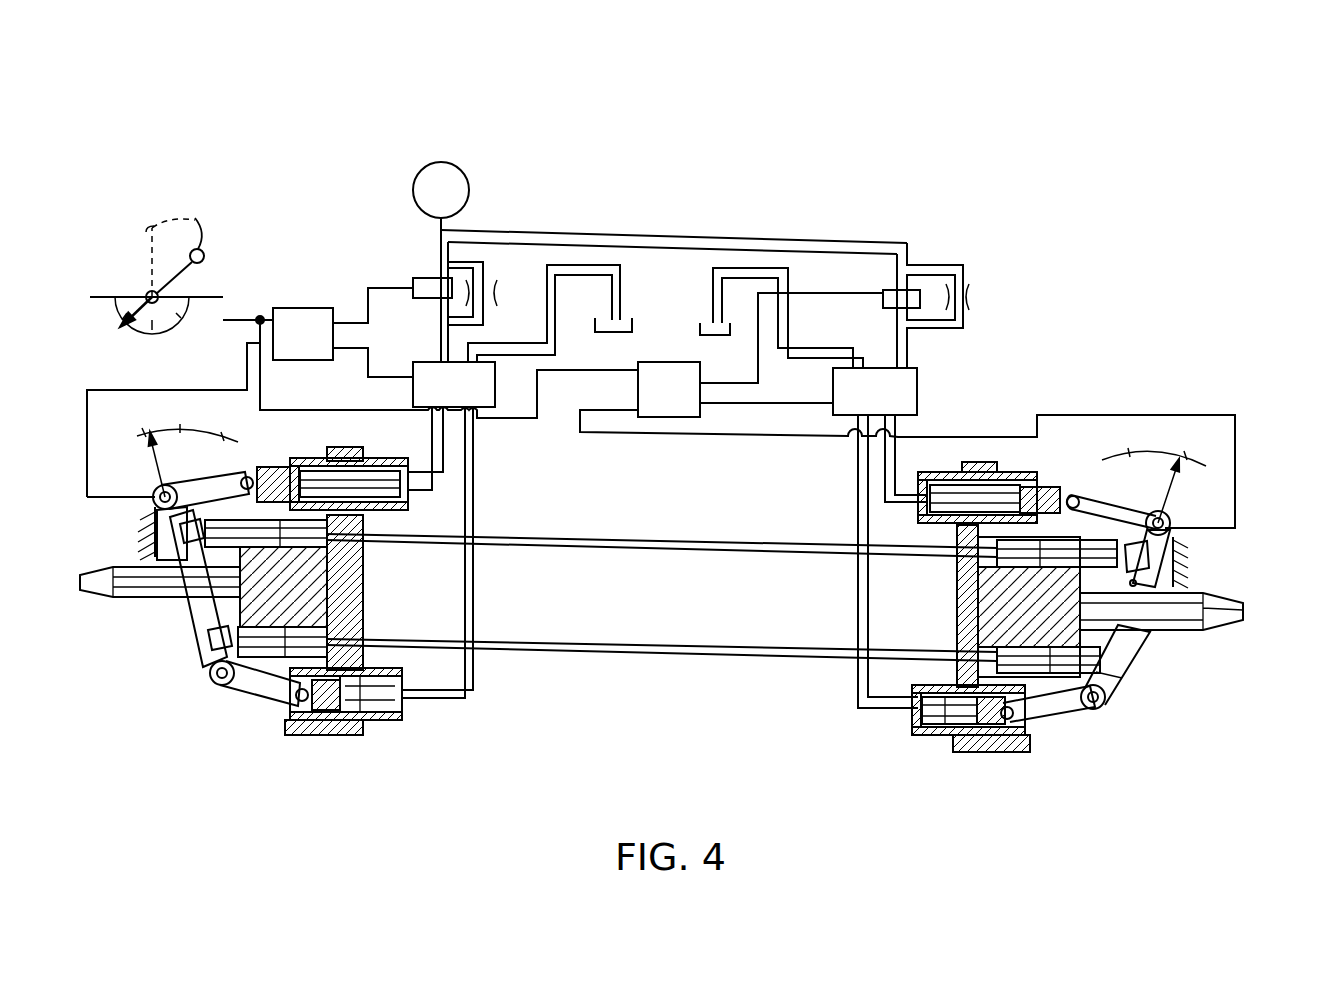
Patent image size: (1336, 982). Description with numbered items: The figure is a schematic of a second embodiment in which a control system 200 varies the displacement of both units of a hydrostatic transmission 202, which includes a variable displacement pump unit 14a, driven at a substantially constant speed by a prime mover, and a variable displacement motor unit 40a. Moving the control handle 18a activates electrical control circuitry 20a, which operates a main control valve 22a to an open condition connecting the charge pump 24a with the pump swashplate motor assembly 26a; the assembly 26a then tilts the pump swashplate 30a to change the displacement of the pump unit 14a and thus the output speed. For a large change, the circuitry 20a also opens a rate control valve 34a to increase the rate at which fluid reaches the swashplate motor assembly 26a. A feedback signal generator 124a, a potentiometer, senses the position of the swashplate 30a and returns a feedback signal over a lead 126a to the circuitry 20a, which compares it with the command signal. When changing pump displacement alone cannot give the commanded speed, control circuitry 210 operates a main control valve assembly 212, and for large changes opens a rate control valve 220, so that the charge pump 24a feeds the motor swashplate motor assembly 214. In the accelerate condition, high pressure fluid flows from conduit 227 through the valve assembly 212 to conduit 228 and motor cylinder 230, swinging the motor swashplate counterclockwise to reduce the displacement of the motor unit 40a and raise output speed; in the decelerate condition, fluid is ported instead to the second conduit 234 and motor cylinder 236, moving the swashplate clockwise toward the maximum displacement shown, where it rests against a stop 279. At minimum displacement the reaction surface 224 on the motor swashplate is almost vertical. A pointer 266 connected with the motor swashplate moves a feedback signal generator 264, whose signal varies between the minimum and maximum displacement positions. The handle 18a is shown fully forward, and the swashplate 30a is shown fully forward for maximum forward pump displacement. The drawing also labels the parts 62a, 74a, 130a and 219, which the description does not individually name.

The charge pump 24a is at (443, 162).
The control handle 18a is at (196, 223).
The electrical control circuitry 20a is at (298, 308).
The rate control valve 34a is at (412, 278).
The main control valve 22a is at (408, 399).
The lead 126a is at (87, 430).
The second signal generator 124a is at (115, 490).
The pointer lever 130a is at (162, 470).
The servo cylinder 62a is at (417, 458).
The hydraulic line 74a is at (473, 505).
The variable displacement pump unit 14a is at (200, 693).
The swashplate 30a is at (188, 628).
The swashplate motor assembly 26a is at (326, 746).
The control circuitry 210 is at (678, 352).
The rate control valve 220 is at (885, 292).
The conduit 227 is at (905, 362).
The main control valve assembly 212 is at (917, 392).
The control system 200 is at (1018, 153).
The hydrostatic transmission 202 is at (577, 728).
The second conduit 234 is at (900, 450).
The conduit 228 is at (855, 598).
The motor cylinder 236 is at (1014, 472).
The pointer 266 is at (1168, 498).
The feedback signal generator 264 is at (1243, 461).
The stop 279 is at (1178, 543).
The reaction surface 224 is at (1178, 578).
The motor unit 40a is at (1094, 738).
The swash plate link 219 is at (1140, 672).
The motor cylinder 230 is at (943, 735).
The swashplate motor assembly 214 is at (899, 740).